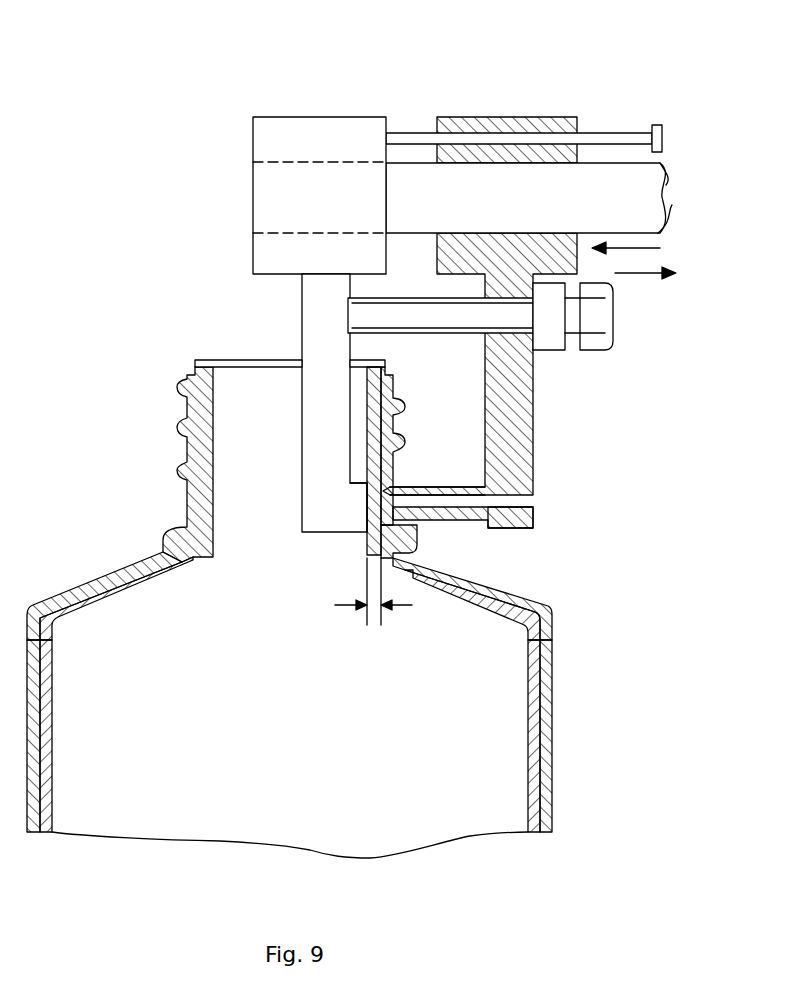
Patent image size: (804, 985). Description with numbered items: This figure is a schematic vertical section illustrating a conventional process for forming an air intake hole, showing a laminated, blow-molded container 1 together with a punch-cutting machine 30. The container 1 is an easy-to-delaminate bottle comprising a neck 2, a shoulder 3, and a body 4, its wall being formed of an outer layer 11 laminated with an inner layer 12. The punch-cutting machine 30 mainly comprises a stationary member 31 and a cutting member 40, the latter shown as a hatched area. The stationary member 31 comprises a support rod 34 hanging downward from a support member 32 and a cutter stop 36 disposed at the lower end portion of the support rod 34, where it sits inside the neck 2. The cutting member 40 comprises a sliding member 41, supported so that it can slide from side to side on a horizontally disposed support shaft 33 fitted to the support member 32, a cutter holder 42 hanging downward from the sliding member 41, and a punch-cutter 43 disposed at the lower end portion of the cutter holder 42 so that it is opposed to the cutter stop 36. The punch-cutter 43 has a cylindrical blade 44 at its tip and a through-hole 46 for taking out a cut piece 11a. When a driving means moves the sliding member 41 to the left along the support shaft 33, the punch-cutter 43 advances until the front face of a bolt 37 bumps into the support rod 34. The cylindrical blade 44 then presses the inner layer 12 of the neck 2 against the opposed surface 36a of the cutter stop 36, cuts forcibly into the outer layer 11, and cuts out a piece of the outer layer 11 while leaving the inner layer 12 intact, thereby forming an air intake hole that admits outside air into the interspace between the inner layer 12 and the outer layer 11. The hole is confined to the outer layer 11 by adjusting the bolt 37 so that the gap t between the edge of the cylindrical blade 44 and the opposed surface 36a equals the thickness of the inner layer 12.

The container 1 is at (585, 608).
The neck 2 is at (180, 398).
The shoulder 3 is at (95, 578).
The body 4 is at (552, 730).
The outer layer 11 is at (552, 653).
The cut piece 11a is at (420, 527).
The inner layer 12 is at (533, 690).
The punch-cutting machine 30 is at (468, 110).
The stationary member 31 is at (292, 343).
The support member 32 is at (311, 115).
The support shaft 33 is at (668, 203).
The support rod 34 is at (302, 318).
The cutter stop 36 is at (358, 522).
The opposed surface 36a is at (367, 497).
The bolt 37 is at (613, 312).
The cutting member 40 is at (560, 440).
The sliding member 41 is at (523, 115).
The cutter holder 42 is at (533, 468).
The punch-cutter 43 is at (463, 520).
The cylindrical blade 44 is at (383, 490).
The through-hole 46 is at (533, 508).